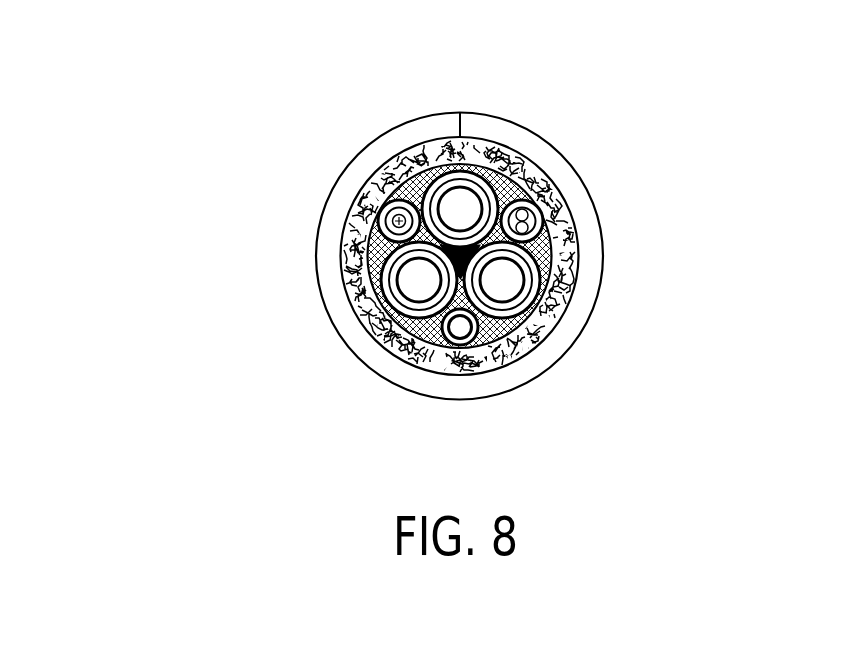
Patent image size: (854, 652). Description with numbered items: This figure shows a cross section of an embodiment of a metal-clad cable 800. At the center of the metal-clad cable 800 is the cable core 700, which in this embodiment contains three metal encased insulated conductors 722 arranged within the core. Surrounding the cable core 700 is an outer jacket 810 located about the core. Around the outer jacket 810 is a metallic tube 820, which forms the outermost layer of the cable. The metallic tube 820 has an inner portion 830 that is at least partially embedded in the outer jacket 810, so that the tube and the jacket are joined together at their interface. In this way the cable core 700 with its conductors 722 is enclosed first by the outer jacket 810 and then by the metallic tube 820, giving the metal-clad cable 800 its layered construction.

The metal-clad cable 800 is at (380, 217).
The cable core 700 is at (428, 256).
The metal encased insulated conductors 722 is at (547, 305).
The outer jacket 810 is at (362, 318).
The metallic tube 820 is at (387, 148).
The inner portion 830 is at (465, 137).